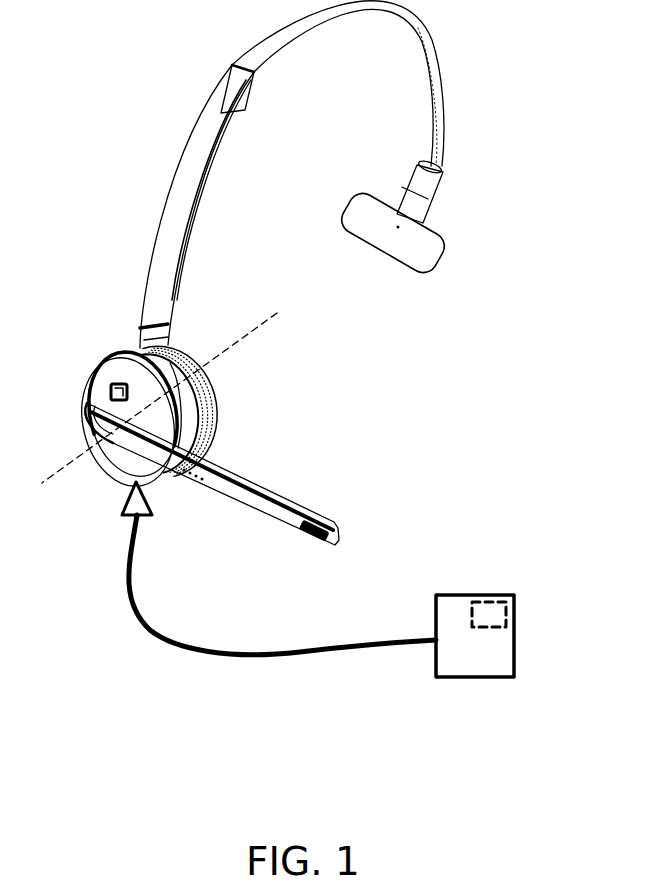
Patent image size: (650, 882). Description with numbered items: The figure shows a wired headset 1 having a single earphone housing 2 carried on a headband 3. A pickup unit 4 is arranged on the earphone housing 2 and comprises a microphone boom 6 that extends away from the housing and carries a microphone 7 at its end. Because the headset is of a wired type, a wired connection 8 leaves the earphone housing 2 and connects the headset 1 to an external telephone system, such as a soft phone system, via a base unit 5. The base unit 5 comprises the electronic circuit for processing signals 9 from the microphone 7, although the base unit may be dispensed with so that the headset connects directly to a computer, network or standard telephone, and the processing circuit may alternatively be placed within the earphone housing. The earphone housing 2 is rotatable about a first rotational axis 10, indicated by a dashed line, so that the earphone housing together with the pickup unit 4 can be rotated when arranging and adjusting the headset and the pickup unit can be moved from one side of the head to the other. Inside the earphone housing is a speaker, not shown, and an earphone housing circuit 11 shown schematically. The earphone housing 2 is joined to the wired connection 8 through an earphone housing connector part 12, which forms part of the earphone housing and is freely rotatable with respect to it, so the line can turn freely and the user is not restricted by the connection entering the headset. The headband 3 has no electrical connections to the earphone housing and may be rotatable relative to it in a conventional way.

The headset 1 is at (203, 80).
The earphone housing 2 is at (170, 390).
The headband 3 is at (305, 25).
The pickup unit 4 is at (257, 532).
The base unit 5 is at (452, 595).
The microphone boom 6 is at (232, 473).
The microphone 7 is at (317, 523).
The wired connection 8 is at (153, 633).
The electronic circuit for processing signals 9 is at (480, 602).
The first rotational axis 10 is at (270, 314).
The earphone housing circuit 11 is at (118, 380).
The earphone housing connector part 12 is at (210, 395).